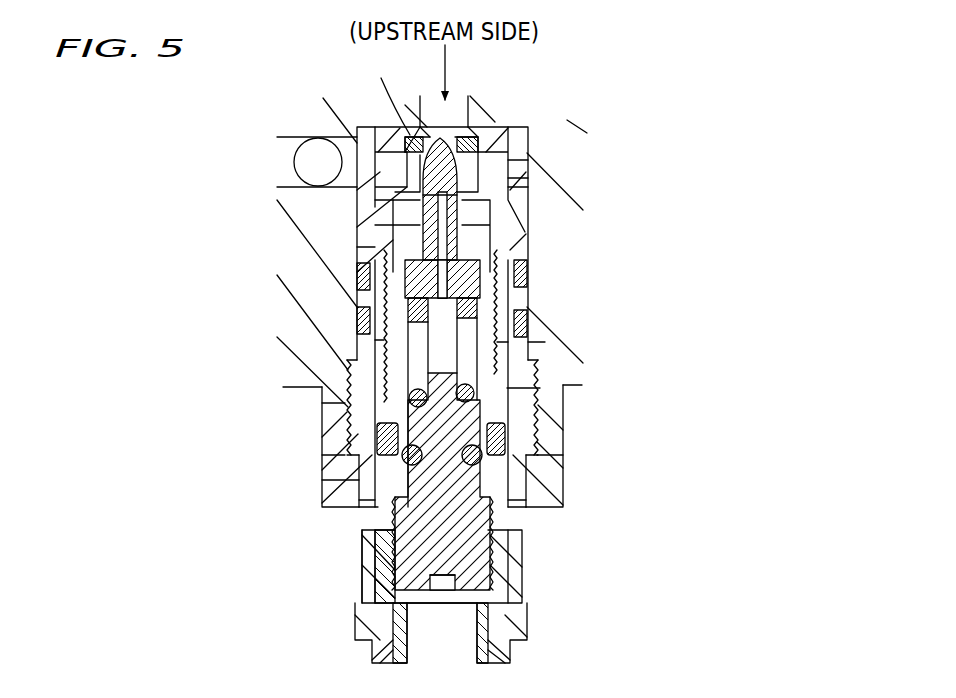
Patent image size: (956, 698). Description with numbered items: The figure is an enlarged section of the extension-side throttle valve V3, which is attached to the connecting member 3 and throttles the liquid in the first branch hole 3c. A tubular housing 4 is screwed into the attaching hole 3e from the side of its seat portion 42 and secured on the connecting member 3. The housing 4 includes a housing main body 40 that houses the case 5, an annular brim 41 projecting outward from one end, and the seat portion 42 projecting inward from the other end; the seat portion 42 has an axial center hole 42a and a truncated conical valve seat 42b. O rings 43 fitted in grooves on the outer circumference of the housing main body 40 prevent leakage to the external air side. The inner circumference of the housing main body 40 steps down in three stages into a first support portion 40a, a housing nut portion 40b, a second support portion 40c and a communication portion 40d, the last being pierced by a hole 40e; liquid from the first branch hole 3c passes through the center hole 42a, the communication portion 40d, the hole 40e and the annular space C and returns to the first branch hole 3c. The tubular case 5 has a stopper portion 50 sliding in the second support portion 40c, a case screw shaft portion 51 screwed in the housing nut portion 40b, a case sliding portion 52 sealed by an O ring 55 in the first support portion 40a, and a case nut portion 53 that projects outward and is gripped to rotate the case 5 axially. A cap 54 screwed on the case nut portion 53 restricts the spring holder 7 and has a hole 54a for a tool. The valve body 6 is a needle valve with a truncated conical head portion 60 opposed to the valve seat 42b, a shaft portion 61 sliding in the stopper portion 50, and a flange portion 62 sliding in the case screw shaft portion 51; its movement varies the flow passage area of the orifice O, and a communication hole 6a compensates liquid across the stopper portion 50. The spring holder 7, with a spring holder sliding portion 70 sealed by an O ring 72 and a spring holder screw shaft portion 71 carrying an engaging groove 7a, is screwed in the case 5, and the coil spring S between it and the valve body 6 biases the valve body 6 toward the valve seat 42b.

The connecting member 3 is at (290, 387).
The first branch hole 3c is at (458, 100).
The attaching hole 3e is at (355, 150).
The housing 4 is at (322, 500).
The case 5 is at (360, 572).
The valve body 6 is at (500, 240).
The communication hole 6a is at (360, 265).
The spring holder 7 is at (520, 485).
The engaging groove 7a is at (510, 550).
The housing main body 40 is at (357, 300).
The first support portion 40a is at (345, 402).
The housing nut portion 40b is at (535, 340).
The second support portion 40c is at (360, 225).
The communication portion 40d is at (528, 190).
The hole 40e is at (357, 195).
The brim 41 is at (320, 460).
The seat portion 42 is at (380, 127).
The center hole 42a is at (427, 137).
The valve seat 42b is at (470, 140).
The O ring 43 is at (530, 270).
The stopper portion 50 is at (360, 243).
The case screw shaft portion 51 is at (370, 340).
The case sliding portion 52 is at (540, 420).
The case nut portion 53 is at (525, 575).
The cap 54 is at (512, 660).
The hole 54a is at (415, 660).
The O ring 55 is at (540, 452).
The head portion 60 is at (540, 135).
The shaft portion 61 is at (510, 215).
The flange portion 62 is at (505, 212).
The spring holder sliding portion 70 is at (345, 435).
The spring holder screw shaft portion 71 is at (375, 560).
The O ring 72 is at (340, 475).
The space C is at (525, 178).
The coil spring S is at (560, 400).
The orifice O is at (391, 93).
The extension-side throttle valve V3 is at (548, 602).